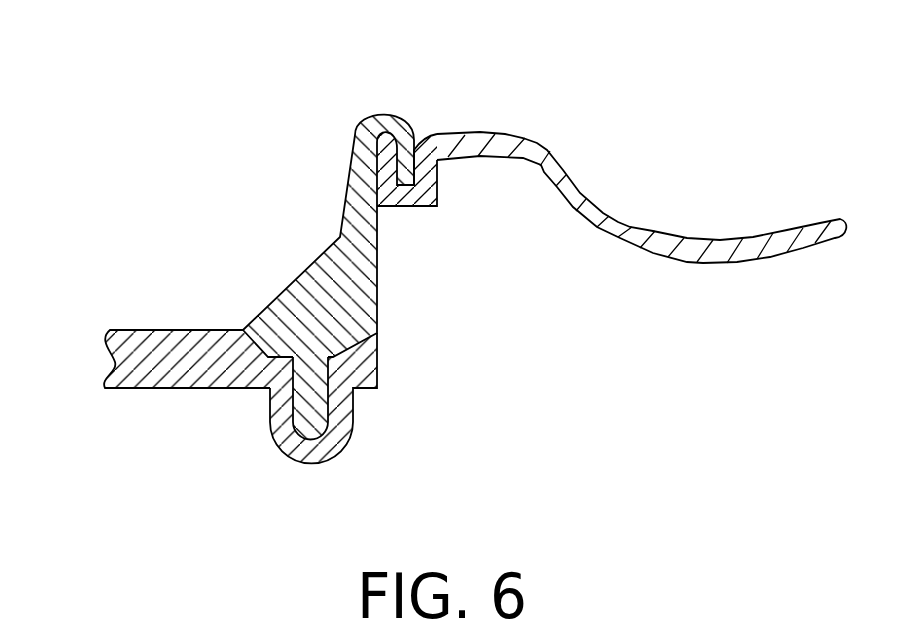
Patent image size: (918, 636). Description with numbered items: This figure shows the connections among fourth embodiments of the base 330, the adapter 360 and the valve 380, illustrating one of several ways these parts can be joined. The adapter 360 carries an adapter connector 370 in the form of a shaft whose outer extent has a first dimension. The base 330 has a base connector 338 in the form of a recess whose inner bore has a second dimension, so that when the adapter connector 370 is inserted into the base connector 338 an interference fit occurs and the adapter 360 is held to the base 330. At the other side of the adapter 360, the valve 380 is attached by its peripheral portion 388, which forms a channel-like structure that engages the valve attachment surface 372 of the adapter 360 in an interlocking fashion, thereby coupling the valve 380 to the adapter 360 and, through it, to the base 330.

The base 330 is at (130, 388).
The base connector 338 is at (290, 427).
The adapter 360 is at (312, 263).
The adapter connector 370 is at (317, 417).
The valve attachment surface 372 is at (405, 120).
The valve 380 is at (712, 265).
The peripheral portion 388 is at (410, 206).